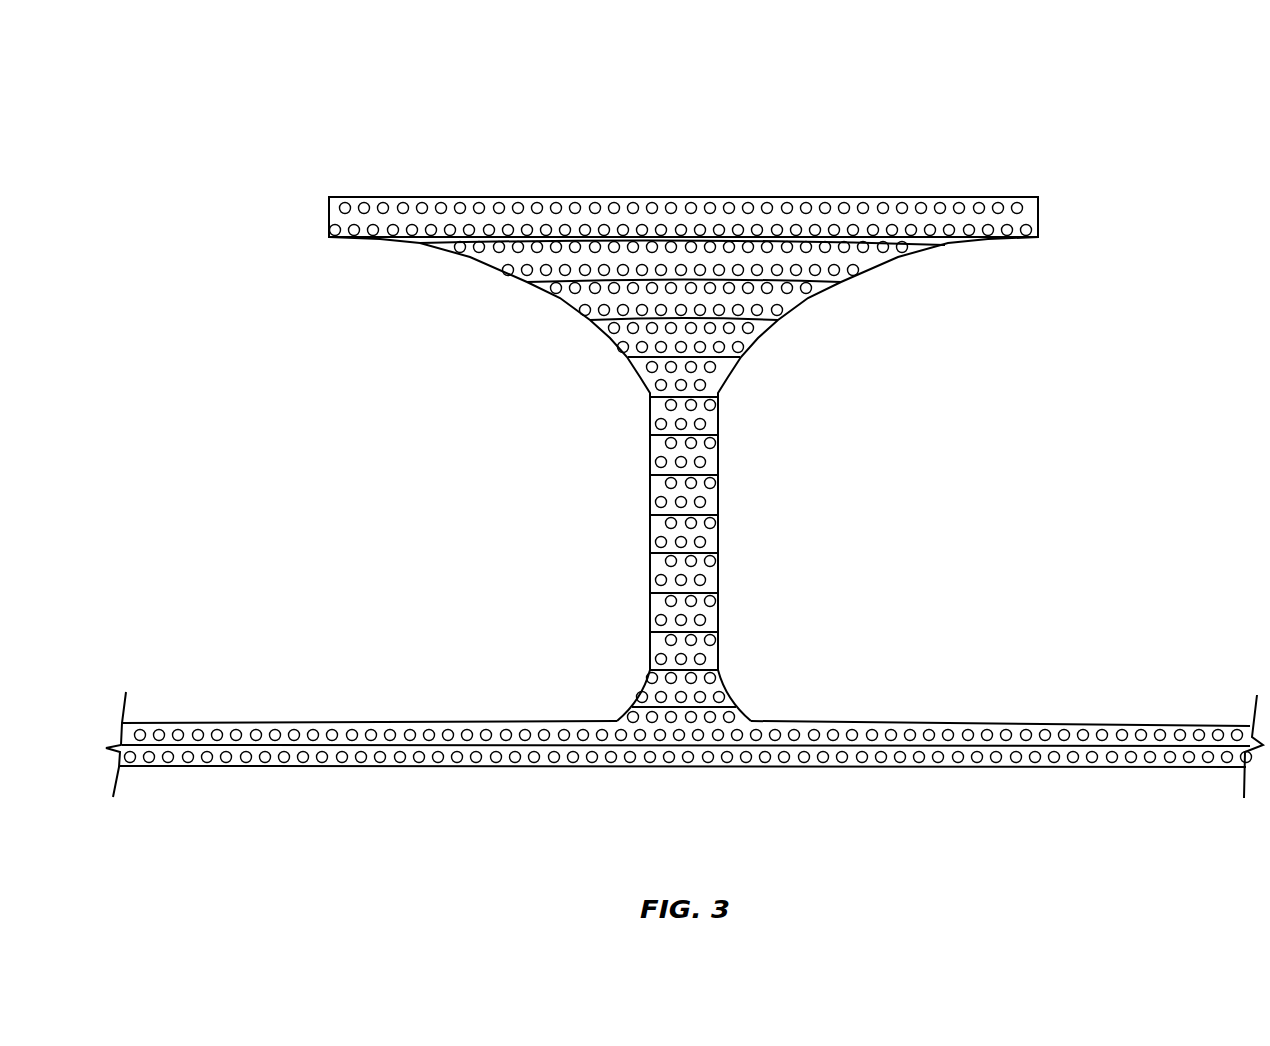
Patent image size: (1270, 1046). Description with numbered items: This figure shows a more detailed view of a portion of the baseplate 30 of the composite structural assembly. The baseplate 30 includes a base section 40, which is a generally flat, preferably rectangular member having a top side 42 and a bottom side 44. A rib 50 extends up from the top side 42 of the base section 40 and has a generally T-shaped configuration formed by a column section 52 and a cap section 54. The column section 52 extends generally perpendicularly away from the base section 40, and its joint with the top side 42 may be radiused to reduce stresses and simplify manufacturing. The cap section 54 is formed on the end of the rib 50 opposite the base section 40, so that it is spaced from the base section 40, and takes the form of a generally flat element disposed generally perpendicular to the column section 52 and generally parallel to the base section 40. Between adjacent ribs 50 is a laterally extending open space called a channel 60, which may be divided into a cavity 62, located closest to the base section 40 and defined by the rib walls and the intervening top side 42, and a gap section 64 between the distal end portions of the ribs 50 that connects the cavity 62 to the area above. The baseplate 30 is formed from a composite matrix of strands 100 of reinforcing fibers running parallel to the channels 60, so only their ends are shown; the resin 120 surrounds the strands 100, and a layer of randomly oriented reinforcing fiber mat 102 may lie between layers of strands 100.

The baseplate 30 is at (665, 90).
The base section 40 is at (198, 753).
The top side 42 is at (278, 723).
The bottom side 44 is at (300, 767).
The rib 50 is at (722, 431).
The column section 52 is at (650, 493).
The cap section 54 is at (412, 207).
The channel 60 is at (1198, 194).
The cavity 62 is at (1008, 462).
The gap section 64 is at (1094, 247).
The strands 100 is at (555, 206).
The mat 102 is at (793, 240).
The resin 120 is at (975, 733).